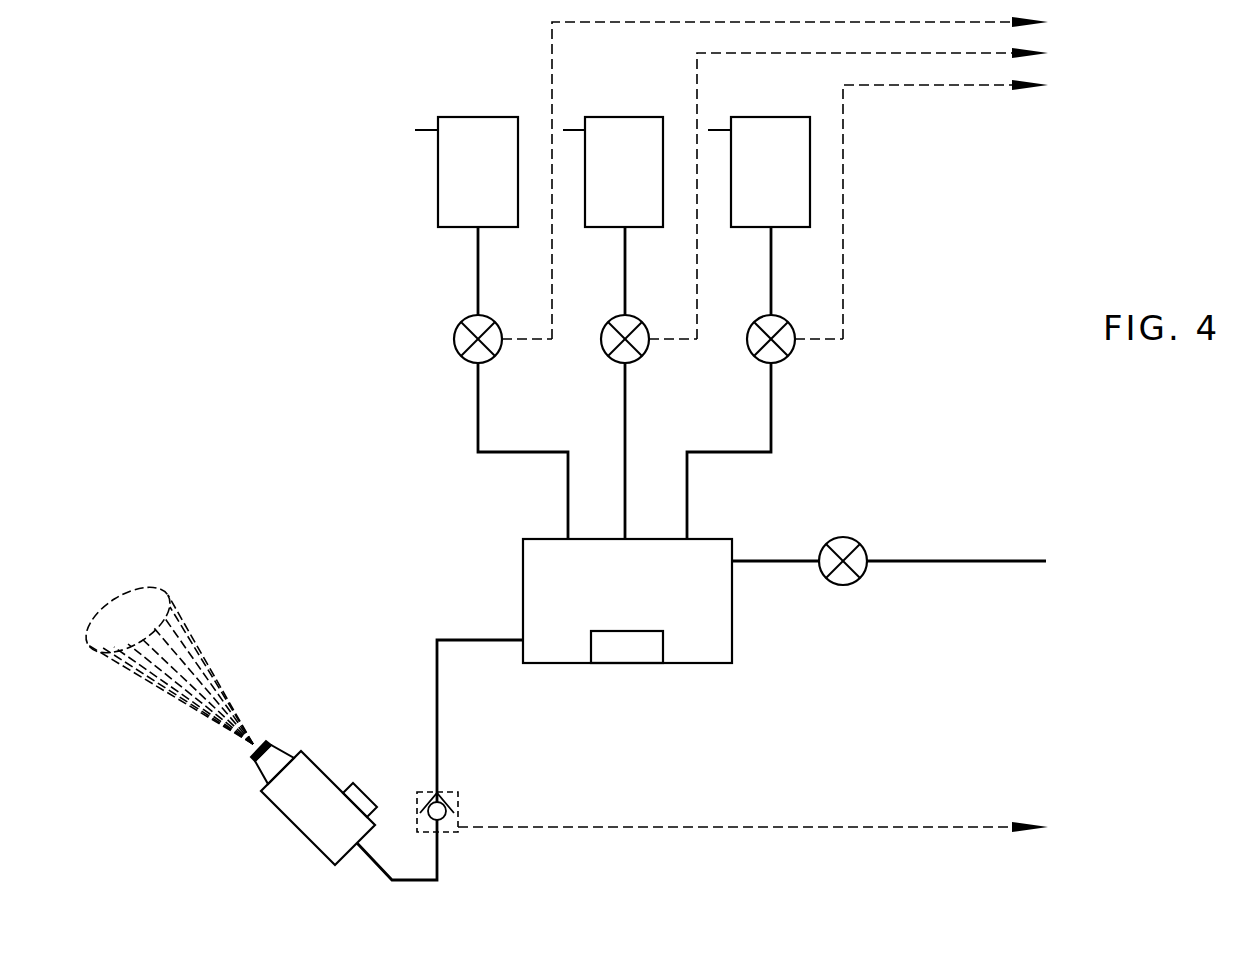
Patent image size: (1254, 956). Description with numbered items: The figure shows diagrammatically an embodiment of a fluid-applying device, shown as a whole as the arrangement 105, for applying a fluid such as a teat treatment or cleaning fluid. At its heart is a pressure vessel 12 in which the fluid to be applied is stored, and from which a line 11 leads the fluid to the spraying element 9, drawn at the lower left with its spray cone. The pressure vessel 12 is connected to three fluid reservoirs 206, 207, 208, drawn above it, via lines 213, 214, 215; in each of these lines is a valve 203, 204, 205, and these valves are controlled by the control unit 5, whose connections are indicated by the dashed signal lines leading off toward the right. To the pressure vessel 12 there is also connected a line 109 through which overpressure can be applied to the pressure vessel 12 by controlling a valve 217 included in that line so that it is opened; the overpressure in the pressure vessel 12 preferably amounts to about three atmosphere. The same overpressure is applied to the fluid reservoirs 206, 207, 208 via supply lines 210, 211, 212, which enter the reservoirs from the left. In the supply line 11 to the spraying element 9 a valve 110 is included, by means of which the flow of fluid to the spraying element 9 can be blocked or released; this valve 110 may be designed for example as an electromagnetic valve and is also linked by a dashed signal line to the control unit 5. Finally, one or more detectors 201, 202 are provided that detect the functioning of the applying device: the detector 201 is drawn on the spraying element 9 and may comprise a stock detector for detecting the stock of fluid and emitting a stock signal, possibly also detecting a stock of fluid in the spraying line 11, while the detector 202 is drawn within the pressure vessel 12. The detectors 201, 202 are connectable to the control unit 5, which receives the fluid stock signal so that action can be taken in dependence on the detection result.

The control unit 5 is at (1080, 68).
The spraying element 9 is at (318, 818).
The line 11 is at (437, 675).
The pressure vessel 12 is at (708, 633).
The spray system 105 is at (322, 600).
The line 109 is at (1039, 563).
The valve 110 is at (455, 795).
The detector 201 is at (357, 793).
The detector 202 is at (627, 647).
The valve 203 is at (455, 339).
The valve 204 is at (602, 339).
The valve 205 is at (748, 339).
The fluid reservoir 206 is at (478, 117).
The fluid reservoir 207 is at (623, 117).
The fluid reservoir 208 is at (771, 117).
The supply line 210 is at (415, 130).
The supply line 211 is at (612, 84).
The supply line 212 is at (752, 84).
The line 213 is at (525, 452).
The line 214 is at (625, 503).
The line 215 is at (728, 452).
The valve 217 is at (843, 540).